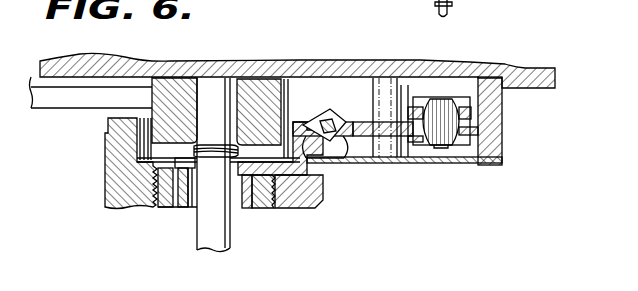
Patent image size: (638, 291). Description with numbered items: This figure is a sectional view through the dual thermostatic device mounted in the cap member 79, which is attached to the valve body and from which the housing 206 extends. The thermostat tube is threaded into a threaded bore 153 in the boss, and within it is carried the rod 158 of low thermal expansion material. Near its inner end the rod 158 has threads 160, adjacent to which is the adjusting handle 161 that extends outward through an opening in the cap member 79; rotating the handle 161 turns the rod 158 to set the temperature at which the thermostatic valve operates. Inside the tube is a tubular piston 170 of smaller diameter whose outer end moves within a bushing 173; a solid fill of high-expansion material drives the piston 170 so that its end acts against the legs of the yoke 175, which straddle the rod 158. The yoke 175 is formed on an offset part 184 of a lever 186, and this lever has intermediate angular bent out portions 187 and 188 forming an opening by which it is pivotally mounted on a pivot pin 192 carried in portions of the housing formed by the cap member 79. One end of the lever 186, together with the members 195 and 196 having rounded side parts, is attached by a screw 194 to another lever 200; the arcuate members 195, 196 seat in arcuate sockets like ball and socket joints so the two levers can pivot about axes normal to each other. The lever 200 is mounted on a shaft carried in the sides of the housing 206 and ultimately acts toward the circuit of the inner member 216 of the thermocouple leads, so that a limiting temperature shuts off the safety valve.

The cap member 79 is at (110, 171).
The threaded bore 153 is at (160, 208).
The rod 158 is at (200, 235).
The threads 160 is at (193, 150).
The adjusting handle 161 is at (122, 82).
The tubular piston 170 is at (243, 210).
The bushing 173 is at (259, 204).
The yoke 175 is at (298, 186).
The offset part 184 is at (323, 180).
The lever 186 is at (361, 116).
The angular bent out portion 187 is at (316, 120).
The angular bent out portion 188 is at (338, 155).
The pivot pin 192 is at (332, 125).
The screw 194 is at (447, 149).
The member 195 is at (479, 95).
The member 196 is at (478, 132).
The lever 200 is at (412, 104).
The housing 206 is at (490, 170).
The inner member 216 is at (449, 7).